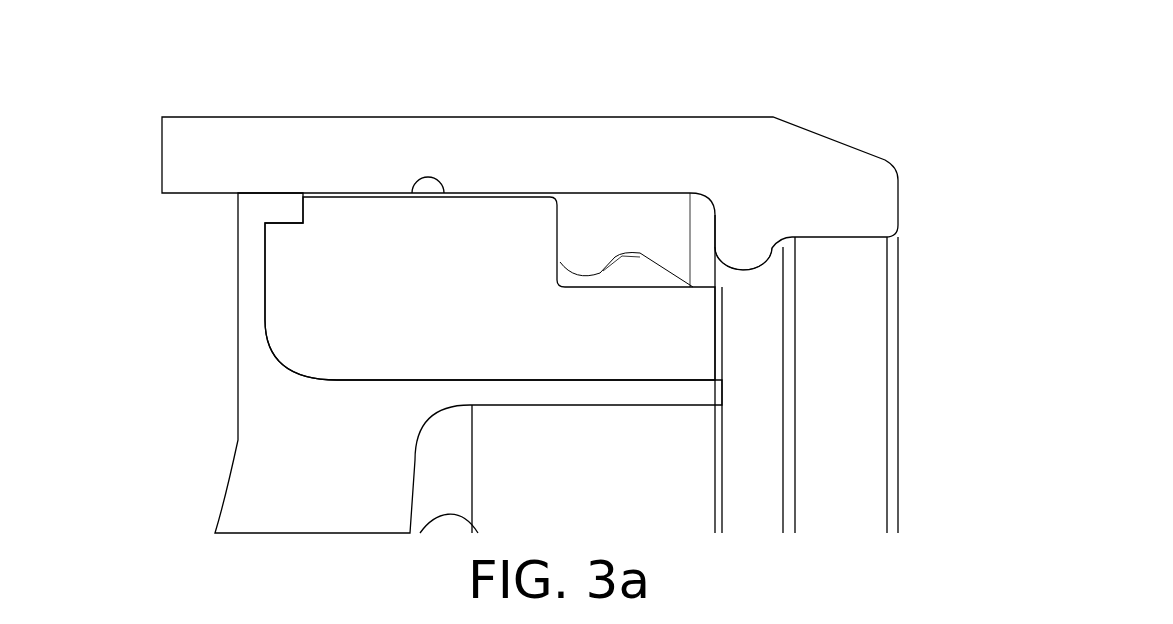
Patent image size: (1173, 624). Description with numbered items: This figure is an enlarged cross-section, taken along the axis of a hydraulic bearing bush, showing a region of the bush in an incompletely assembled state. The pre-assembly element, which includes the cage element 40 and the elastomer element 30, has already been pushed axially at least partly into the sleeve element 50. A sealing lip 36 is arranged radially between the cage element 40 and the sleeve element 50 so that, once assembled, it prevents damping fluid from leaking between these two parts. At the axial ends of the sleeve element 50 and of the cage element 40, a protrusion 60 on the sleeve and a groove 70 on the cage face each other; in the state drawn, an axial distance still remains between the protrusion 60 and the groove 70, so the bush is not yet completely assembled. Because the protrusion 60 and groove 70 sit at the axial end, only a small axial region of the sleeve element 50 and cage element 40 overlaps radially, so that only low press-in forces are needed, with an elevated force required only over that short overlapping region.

The elastomer element 30 is at (252, 470).
The sealing lip 36 is at (429, 180).
The cage element 40 is at (288, 330).
The sleeve element 50 is at (610, 161).
The protrusion 60 is at (756, 243).
The groove 70 is at (616, 275).